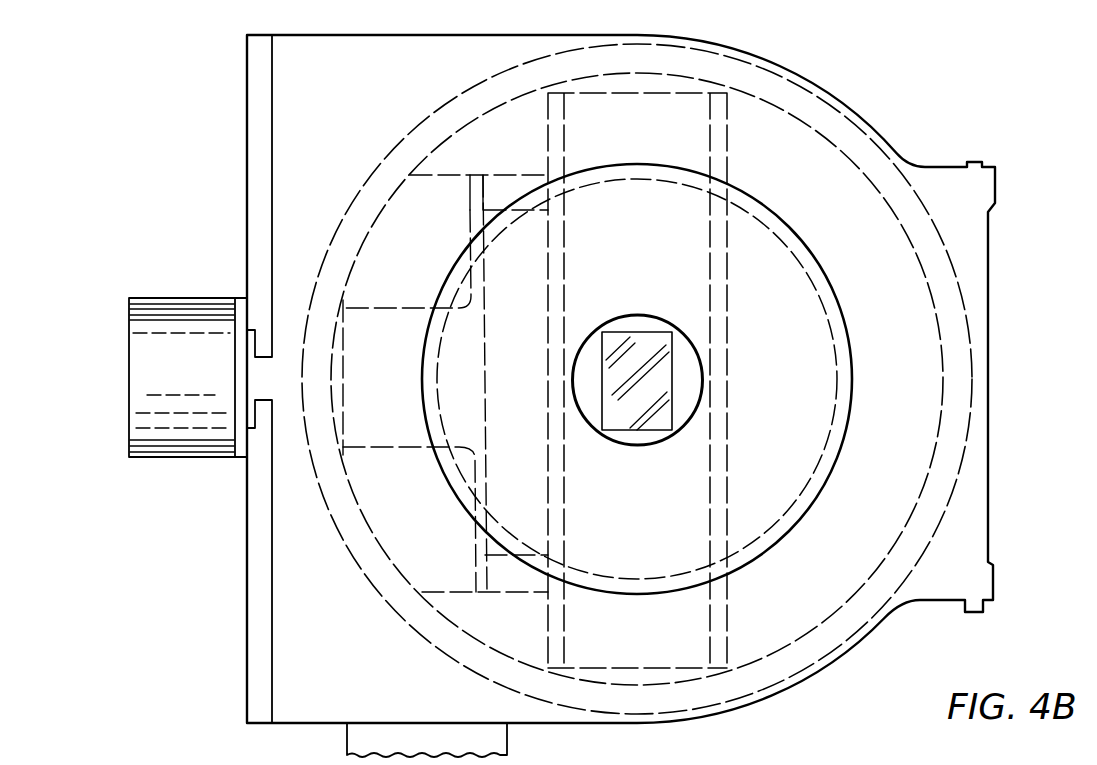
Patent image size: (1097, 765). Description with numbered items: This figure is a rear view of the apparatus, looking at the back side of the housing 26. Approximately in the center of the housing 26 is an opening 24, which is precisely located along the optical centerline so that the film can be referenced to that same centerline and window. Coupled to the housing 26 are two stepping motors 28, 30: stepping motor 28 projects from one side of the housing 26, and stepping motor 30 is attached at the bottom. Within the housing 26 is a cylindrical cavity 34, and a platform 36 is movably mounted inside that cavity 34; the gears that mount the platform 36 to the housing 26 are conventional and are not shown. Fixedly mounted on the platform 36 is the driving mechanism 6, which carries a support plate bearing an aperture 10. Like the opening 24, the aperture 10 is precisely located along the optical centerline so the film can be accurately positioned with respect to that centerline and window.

The driving mechanism 6 is at (717, 419).
The aperture 10 is at (672, 398).
The opening 24 is at (693, 348).
The housing 26 is at (993, 208).
The stepping motor 28 is at (172, 307).
The stepping motor 30 is at (361, 738).
The cylindrical cavity 34 is at (960, 283).
The platform 36 is at (852, 158).